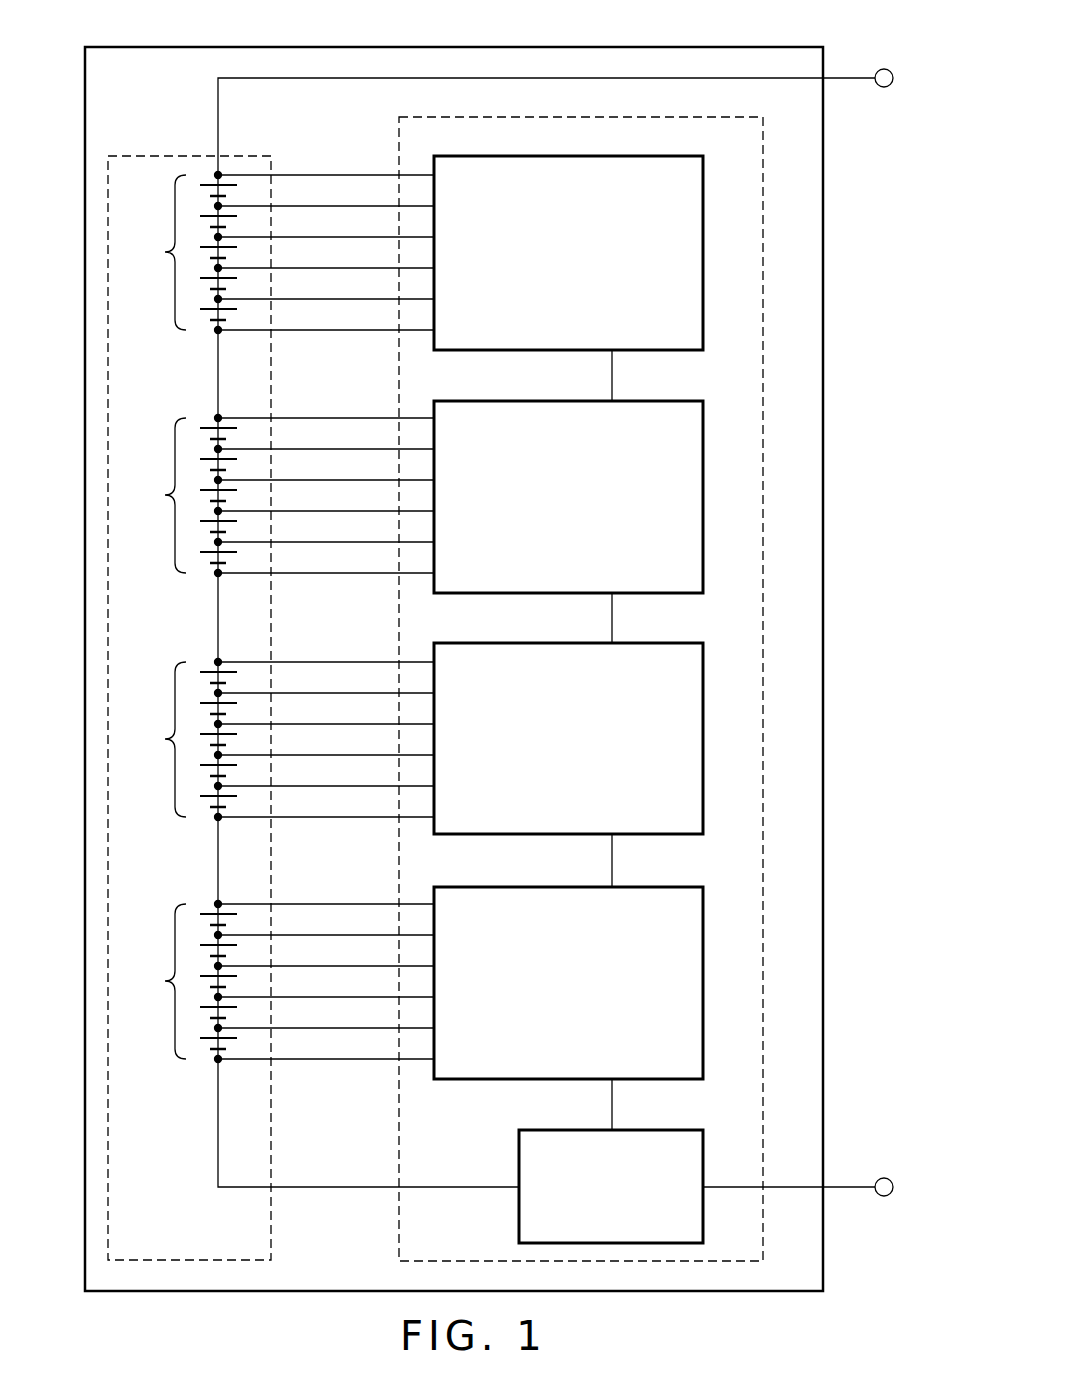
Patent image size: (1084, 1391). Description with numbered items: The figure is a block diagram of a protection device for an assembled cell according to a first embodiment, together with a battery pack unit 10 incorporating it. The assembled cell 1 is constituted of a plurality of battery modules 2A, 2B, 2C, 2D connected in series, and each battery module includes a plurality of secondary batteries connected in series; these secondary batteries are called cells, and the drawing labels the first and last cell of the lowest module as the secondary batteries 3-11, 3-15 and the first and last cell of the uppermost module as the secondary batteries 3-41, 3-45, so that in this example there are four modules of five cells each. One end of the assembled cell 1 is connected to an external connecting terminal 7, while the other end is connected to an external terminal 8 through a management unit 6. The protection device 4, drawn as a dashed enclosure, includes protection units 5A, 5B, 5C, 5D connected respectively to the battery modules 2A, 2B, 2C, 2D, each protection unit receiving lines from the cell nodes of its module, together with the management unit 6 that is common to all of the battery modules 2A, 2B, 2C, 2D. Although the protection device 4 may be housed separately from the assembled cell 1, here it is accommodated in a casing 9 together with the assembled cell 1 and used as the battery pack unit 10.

The assembled cell 1 is at (128, 155).
The battery module 2A is at (281, 984).
The battery module 2B is at (281, 740).
The battery module 2C is at (281, 496).
The battery module 2D is at (280, 248).
The secondary battery 3-11 is at (207, 1062).
The secondary battery 3-15 is at (207, 907).
The secondary battery 3-41 is at (207, 332).
The secondary battery 3-45 is at (207, 178).
The protection device 4 is at (764, 190).
The protection unit 5A is at (686, 887).
The protection unit 5B is at (686, 643).
The protection unit 5C is at (686, 401).
The protection unit 5D is at (686, 156).
The management unit 6 is at (686, 1130).
The external connecting terminal 7 is at (884, 69).
The external terminal 8 is at (884, 1178).
The casing 9 is at (662, 47).
The battery pack unit 10 is at (495, 646).